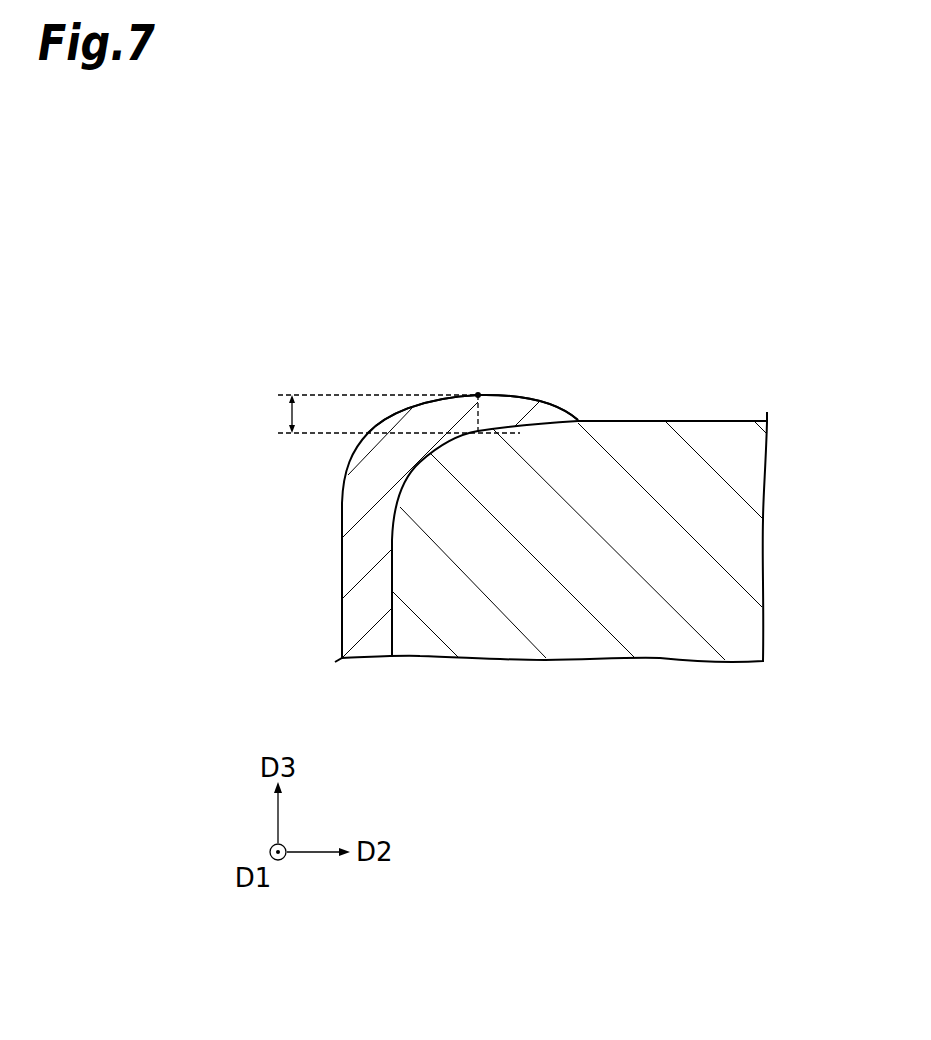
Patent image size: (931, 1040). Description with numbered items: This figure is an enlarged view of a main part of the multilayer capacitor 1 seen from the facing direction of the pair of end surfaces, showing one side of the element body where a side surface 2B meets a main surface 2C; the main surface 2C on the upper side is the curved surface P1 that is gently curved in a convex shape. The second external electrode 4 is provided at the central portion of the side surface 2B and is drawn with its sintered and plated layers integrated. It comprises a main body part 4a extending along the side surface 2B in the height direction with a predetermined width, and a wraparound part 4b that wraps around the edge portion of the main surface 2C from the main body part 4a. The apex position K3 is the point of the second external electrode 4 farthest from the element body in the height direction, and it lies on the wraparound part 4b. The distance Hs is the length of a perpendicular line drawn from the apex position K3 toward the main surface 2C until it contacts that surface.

The multilayer capacitor 1 is at (344, 311).
The second external electrode 4 is at (320, 528).
The main body part 4a is at (355, 630).
The wraparound part 4b is at (516, 396).
The apex position K3 is at (477, 392).
The side surface 2B is at (390, 578).
The main surface 2C is at (703, 419).
The distance Hs is at (381, 414).